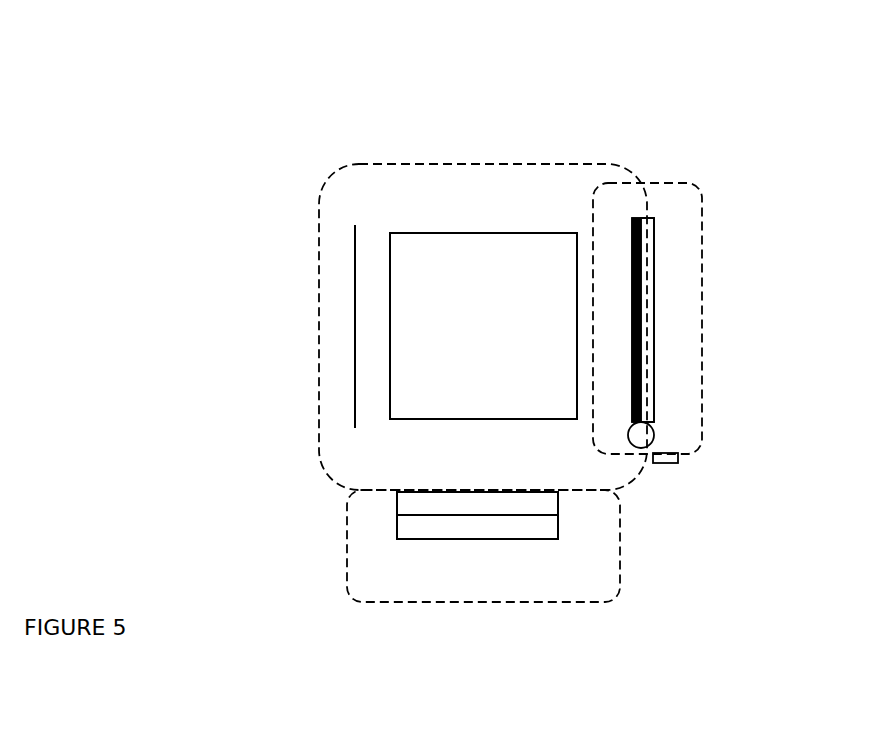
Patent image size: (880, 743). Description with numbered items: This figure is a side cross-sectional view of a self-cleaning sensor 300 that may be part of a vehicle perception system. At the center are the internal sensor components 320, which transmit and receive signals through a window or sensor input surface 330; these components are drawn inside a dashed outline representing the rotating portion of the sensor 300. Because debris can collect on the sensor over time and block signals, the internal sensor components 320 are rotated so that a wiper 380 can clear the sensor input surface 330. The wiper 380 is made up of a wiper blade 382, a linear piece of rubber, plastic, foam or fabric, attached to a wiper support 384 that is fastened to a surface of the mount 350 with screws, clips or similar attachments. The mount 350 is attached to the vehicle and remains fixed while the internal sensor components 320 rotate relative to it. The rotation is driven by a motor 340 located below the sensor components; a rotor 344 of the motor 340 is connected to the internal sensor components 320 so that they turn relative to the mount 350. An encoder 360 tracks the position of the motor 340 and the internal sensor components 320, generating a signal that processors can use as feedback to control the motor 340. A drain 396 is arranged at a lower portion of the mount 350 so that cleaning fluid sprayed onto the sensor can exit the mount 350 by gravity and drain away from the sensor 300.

The sensor 300 is at (160, 84).
The internal sensor components 320 is at (357, 272).
The sensor input surface 330 is at (390, 364).
The motor 340 is at (620, 520).
The rotor 344 is at (397, 528).
The mount 350 is at (702, 260).
The encoder 360 is at (397, 505).
The wiper 380 is at (654, 287).
The wiper blade 382 is at (641, 352).
The wiper support 384 is at (654, 392).
The drain 396 is at (678, 462).